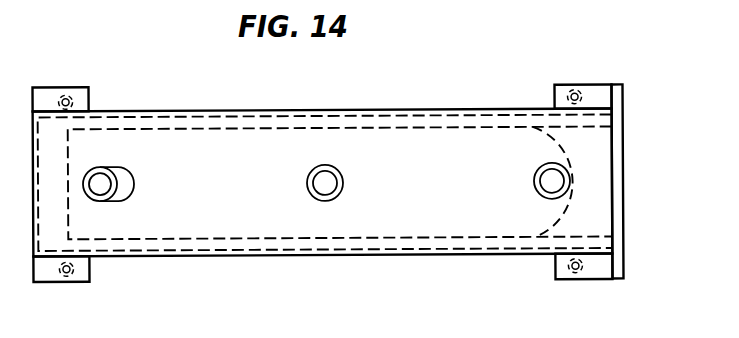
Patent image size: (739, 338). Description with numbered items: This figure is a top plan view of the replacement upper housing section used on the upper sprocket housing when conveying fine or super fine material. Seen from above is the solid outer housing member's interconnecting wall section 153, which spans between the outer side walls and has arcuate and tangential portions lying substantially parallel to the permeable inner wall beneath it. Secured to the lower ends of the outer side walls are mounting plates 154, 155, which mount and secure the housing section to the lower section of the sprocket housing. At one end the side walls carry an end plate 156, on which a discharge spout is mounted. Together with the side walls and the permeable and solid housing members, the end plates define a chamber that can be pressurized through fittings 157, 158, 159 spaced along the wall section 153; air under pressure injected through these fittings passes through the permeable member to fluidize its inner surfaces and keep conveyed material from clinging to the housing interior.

The interconnecting wall section 153 is at (409, 220).
The mounting plate 154 is at (48, 282).
The mounting plate 155 is at (594, 281).
The end plate 156 is at (623, 203).
The fitting 157 is at (134, 183).
The fitting 158 is at (344, 185).
The fitting 159 is at (533, 181).